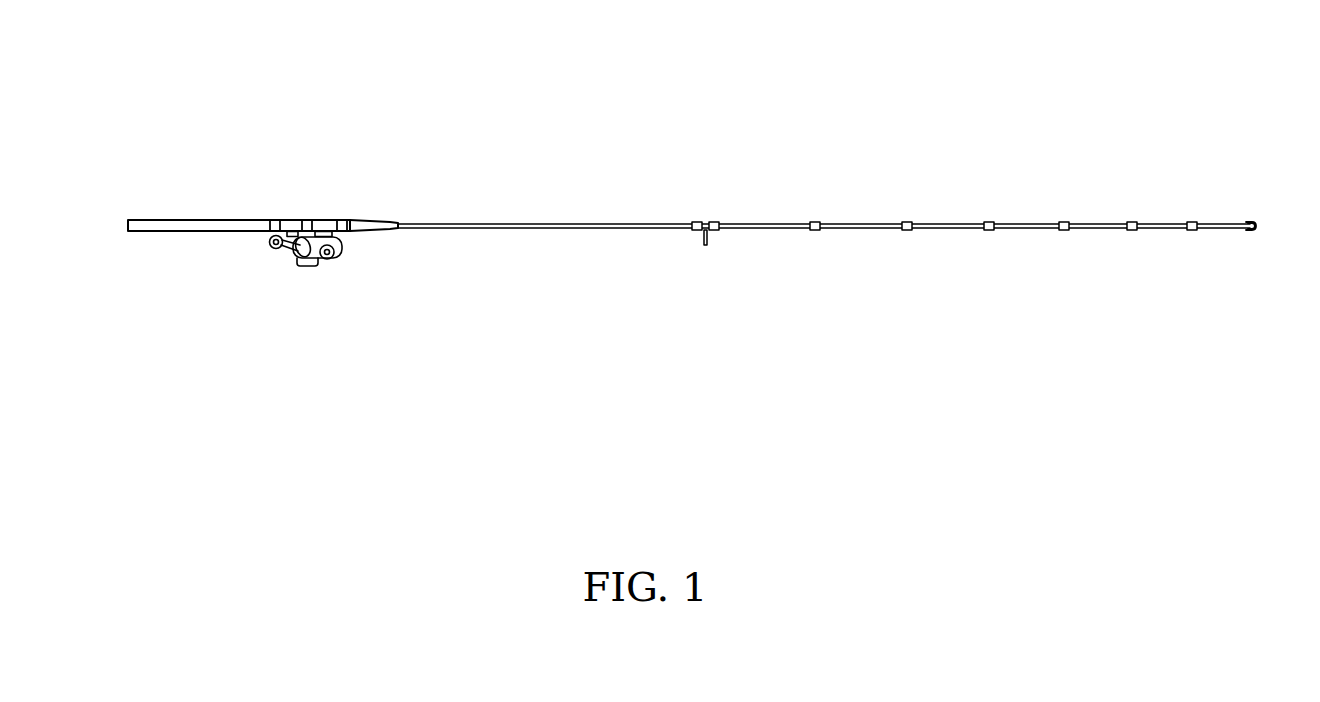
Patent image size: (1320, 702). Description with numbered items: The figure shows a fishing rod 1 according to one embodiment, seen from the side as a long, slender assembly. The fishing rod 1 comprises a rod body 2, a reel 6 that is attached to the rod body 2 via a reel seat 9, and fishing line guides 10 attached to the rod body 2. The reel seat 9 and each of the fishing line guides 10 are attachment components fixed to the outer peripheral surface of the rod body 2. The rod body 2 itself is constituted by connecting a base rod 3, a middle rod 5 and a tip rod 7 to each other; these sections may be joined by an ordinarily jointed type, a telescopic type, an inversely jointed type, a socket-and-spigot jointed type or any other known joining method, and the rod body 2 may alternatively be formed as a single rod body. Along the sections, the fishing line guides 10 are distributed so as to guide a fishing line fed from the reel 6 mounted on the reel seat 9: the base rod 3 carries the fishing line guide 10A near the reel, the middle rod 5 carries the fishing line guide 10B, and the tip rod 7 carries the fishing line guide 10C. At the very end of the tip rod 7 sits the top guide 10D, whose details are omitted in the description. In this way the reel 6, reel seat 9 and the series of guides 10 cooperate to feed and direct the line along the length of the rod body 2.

The fishing rod 1 is at (396, 39).
The rod body 2 is at (1040, 153).
The base rod 3 is at (515, 223).
The middle rod 5 is at (866, 223).
The reel 6 is at (310, 266).
The tip rod 7 is at (1034, 223).
The reel seat 9 is at (348, 243).
The fishing line guide 10 is at (1273, 327).
The fishing line guide 10A is at (712, 252).
The fishing line guide 10B is at (823, 235).
The fishing line guide 10C is at (1069, 235).
The top guide 10D is at (1252, 232).